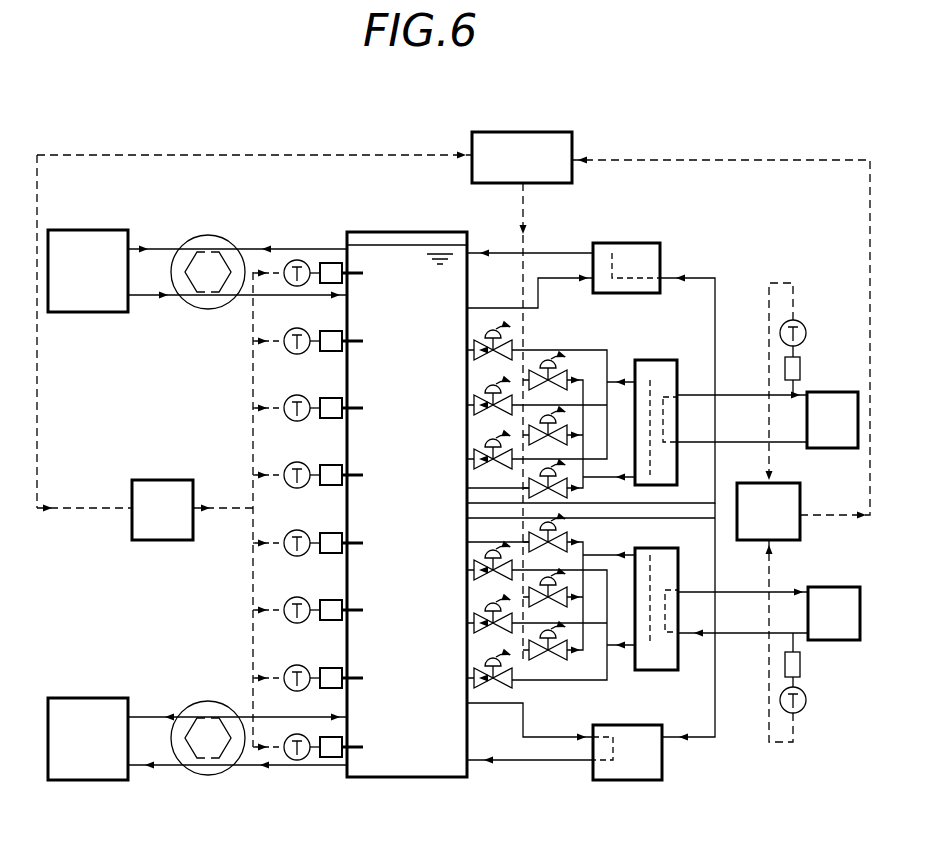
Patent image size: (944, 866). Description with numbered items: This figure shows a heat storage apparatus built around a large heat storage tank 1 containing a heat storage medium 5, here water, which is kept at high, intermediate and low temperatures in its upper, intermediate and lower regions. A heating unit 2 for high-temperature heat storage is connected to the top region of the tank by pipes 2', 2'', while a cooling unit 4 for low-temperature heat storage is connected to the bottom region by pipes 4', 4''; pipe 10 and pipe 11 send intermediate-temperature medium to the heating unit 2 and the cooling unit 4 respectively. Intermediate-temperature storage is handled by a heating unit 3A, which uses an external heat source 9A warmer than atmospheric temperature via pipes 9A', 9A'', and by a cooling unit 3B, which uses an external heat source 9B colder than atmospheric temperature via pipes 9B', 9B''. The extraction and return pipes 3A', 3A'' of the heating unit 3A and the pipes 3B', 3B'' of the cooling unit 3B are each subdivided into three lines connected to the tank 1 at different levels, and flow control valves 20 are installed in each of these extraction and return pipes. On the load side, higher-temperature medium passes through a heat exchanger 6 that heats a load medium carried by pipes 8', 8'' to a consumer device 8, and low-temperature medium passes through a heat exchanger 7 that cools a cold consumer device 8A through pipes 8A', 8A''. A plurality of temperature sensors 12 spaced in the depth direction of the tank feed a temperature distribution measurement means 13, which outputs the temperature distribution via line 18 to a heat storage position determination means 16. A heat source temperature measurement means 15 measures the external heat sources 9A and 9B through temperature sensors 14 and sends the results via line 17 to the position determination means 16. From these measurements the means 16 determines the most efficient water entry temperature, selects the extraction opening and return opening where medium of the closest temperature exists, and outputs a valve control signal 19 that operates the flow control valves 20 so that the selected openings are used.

The heat storage tank 1 is at (368, 778).
The heating unit 2 is at (632, 248).
The pipe 2' is at (530, 289).
The pipe 2'' is at (530, 234).
The heating unit 3A is at (665, 403).
The pipe 3A' is at (466, 483).
The pipe 3A'' is at (552, 406).
The cooling unit 3B is at (662, 626).
The pipe 3B' is at (466, 528).
The pipe 3B'' is at (591, 615).
The cooling unit 4 is at (646, 755).
The pipe 4' is at (530, 723).
The pipe 4'' is at (530, 785).
The heat storage medium 5 is at (402, 245).
The heat exchanger 6 is at (205, 309).
The heat exchanger 7 is at (232, 705).
The heat-load or consumer device 8 is at (87, 286).
The pipe 8' is at (237, 318).
The pipe 8'' is at (237, 227).
The cold heat load or consumer device 8A is at (84, 721).
The pipe 8A' is at (237, 692).
The pipe 8A'' is at (237, 788).
The external heat source 9A is at (832, 393).
The pipe 9A' is at (742, 374).
The pipe 9A'' is at (742, 424).
The external heat source 9B is at (836, 630).
The pipe 9B' is at (743, 654).
The pipe 9B'' is at (743, 578).
The pipe 10 is at (715, 278).
The pipe 11 is at (715, 737).
The temperature sensors 12 is at (323, 262).
The temperature distribution measurement means 13 is at (131, 536).
The temperature sensors 14 is at (805, 322).
The heat source temperature measurement means 15 is at (800, 497).
The heat storage position determination means 16 is at (555, 132).
The line 17 is at (624, 160).
The line 18 is at (350, 155).
The valve control signal 19 is at (528, 216).
The flow control valves 20 is at (552, 372).